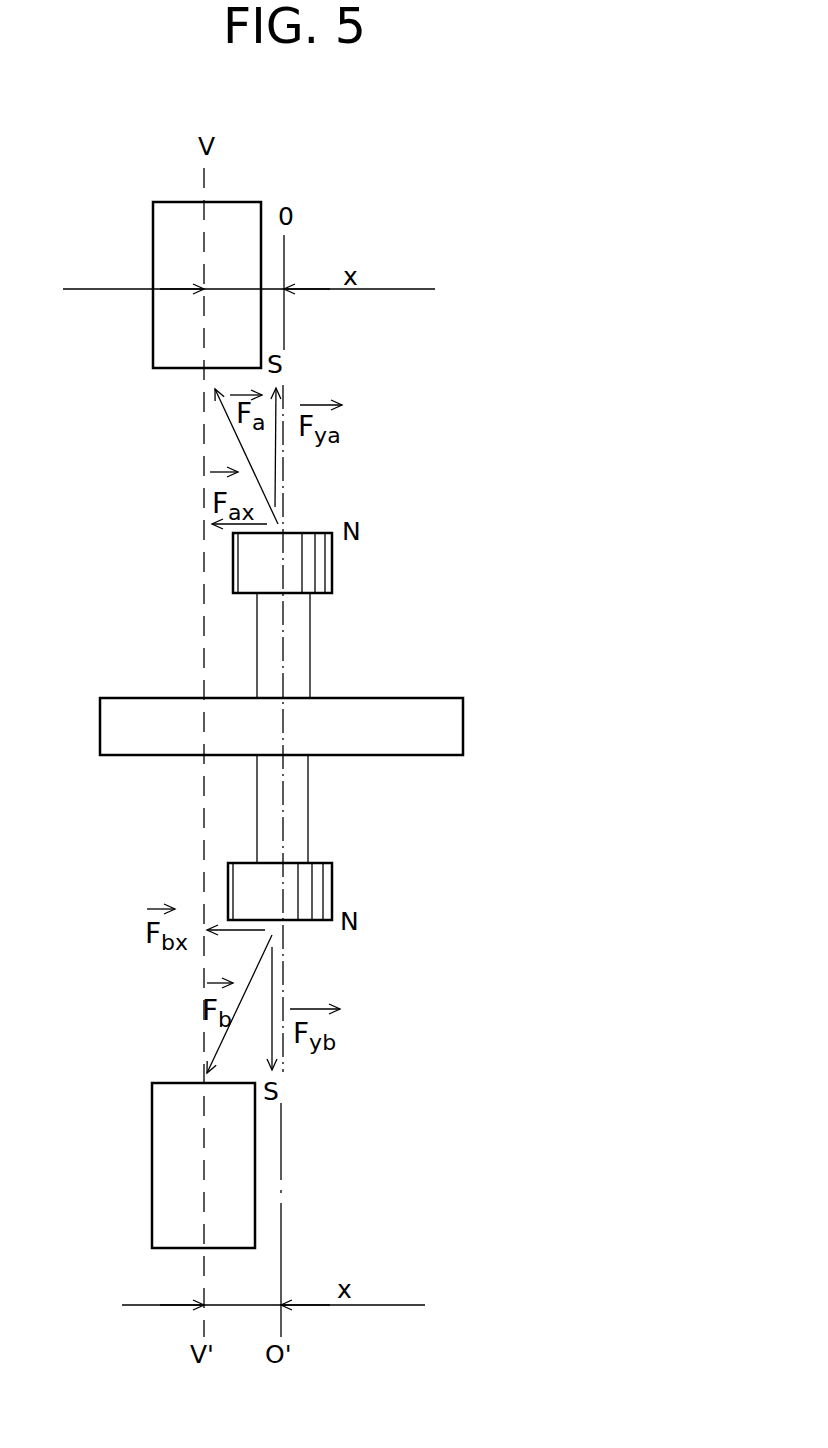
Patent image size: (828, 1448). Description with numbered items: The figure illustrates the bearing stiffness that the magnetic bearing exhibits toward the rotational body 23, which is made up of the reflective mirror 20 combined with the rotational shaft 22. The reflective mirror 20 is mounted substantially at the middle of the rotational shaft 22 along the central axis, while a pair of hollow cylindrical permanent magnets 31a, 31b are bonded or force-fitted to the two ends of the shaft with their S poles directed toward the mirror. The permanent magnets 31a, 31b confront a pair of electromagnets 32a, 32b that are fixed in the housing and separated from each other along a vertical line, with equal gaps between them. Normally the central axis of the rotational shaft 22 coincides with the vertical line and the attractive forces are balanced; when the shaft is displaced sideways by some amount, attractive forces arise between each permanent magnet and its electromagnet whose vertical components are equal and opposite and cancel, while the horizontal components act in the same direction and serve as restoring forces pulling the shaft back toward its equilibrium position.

The reflective mirror 20 is at (445, 727).
The rotational shaft 22 is at (300, 643).
The rotational body 23 is at (552, 675).
The permanent magnet 31a is at (320, 572).
The permanent magnet 31b is at (320, 888).
The electromagnet 32a is at (240, 210).
The electromagnet 32b is at (243, 1155).